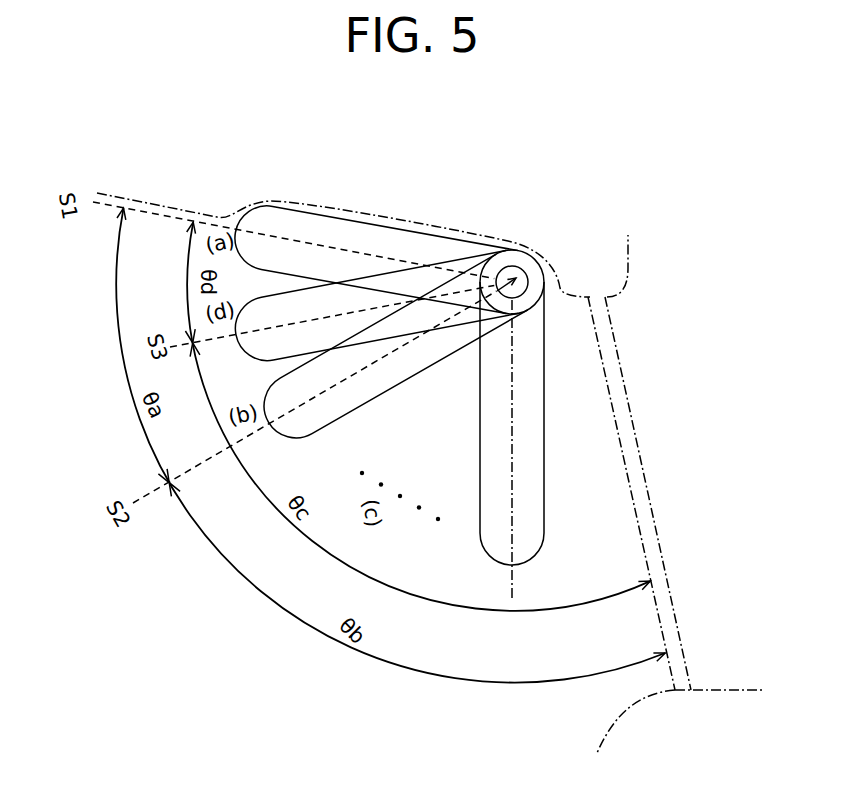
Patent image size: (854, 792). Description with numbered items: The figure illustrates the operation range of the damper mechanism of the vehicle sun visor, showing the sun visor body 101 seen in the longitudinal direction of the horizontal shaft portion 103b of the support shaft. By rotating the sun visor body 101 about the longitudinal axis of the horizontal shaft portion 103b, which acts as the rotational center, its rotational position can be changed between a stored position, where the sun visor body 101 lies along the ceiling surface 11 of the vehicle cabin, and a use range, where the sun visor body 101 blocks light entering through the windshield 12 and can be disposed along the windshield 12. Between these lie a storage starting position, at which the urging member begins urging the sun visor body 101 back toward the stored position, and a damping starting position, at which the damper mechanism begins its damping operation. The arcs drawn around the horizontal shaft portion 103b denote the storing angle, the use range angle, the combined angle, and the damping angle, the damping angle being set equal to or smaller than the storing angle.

The ceiling surface 11 is at (412, 222).
The windshield 12 is at (632, 408).
The sun visor body 101 is at (494, 430).
The horizontal shaft portion 103b is at (524, 268).